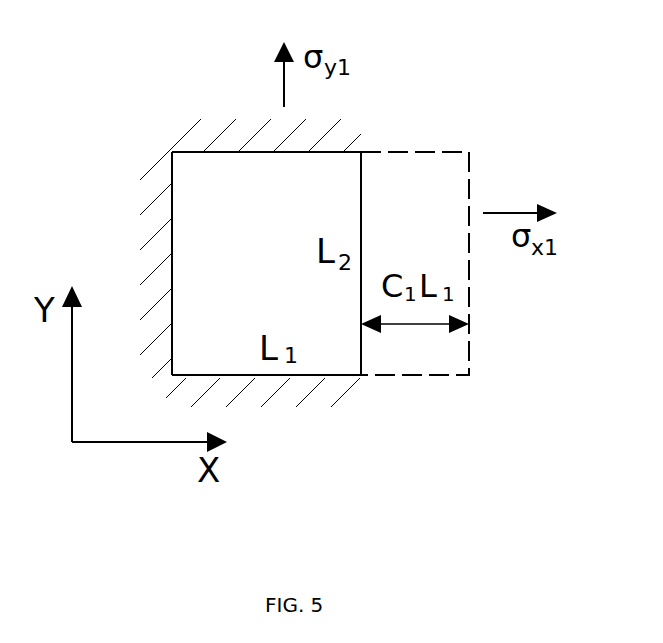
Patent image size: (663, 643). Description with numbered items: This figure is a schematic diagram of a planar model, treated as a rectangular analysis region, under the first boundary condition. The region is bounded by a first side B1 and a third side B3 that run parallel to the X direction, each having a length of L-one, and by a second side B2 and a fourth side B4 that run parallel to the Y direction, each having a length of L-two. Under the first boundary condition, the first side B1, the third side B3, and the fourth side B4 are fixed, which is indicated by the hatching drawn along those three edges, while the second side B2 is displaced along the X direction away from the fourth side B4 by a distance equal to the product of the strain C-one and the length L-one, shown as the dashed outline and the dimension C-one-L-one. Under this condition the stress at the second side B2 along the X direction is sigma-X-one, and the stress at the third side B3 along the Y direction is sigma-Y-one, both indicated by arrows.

The first side B1 is at (303, 375).
The second side B2 is at (363, 200).
The third side B3 is at (255, 152).
The fourth side B4 is at (172, 222).